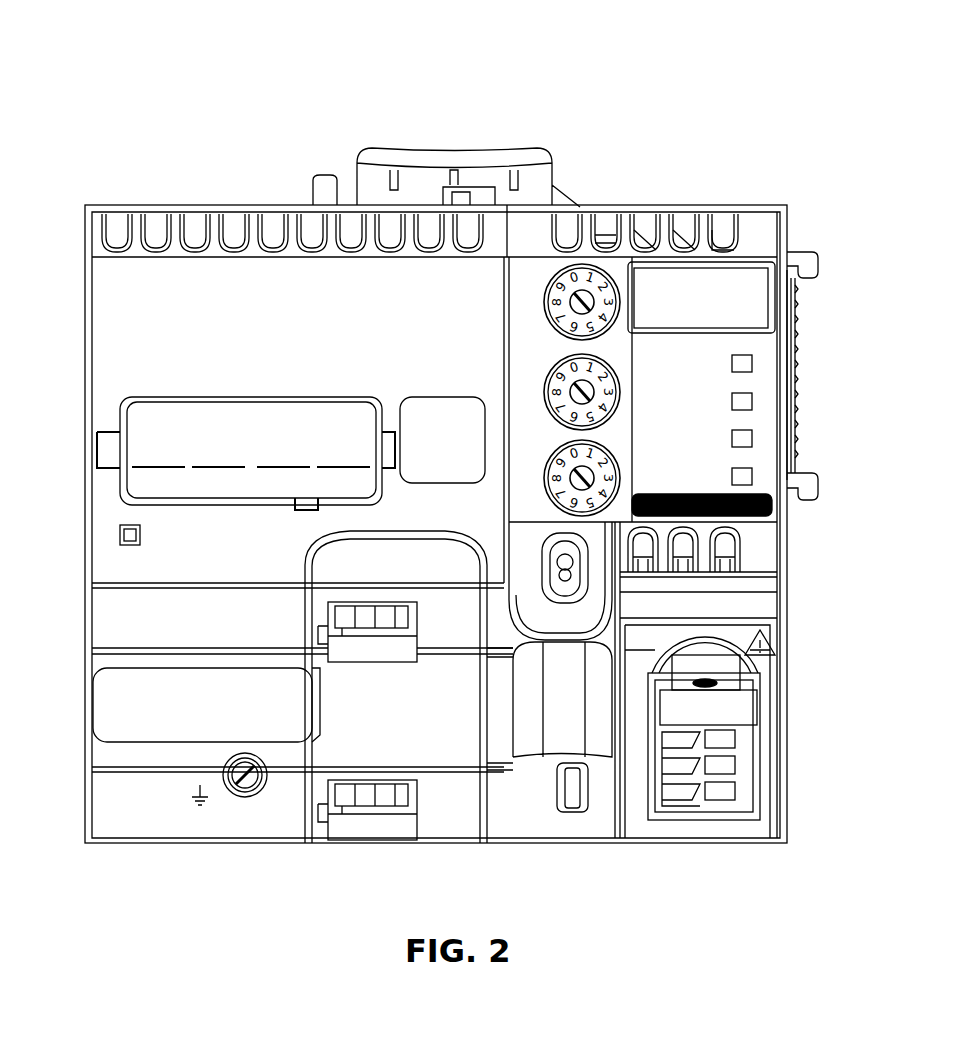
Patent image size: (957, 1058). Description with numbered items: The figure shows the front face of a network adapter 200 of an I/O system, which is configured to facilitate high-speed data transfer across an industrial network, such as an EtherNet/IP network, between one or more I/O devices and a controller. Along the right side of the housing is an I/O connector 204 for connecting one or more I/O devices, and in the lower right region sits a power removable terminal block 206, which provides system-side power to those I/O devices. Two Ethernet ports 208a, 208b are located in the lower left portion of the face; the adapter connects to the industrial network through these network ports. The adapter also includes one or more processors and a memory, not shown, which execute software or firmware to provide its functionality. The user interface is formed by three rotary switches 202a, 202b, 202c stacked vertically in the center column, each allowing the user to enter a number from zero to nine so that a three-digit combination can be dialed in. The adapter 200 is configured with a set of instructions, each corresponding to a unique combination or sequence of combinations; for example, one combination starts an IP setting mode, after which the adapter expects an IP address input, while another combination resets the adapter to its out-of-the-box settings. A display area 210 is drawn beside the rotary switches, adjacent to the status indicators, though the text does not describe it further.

The network adapter 200 is at (826, 125).
The rotary switch 202a is at (598, 287).
The rotary switch 202b is at (635, 392).
The rotary switch 202c is at (635, 478).
The I/O connector 204 is at (815, 268).
The power removable terminal block 206 is at (745, 793).
The Ethernet port 208a is at (363, 645).
The Ethernet port 208b is at (352, 820).
The display 210 is at (697, 296).